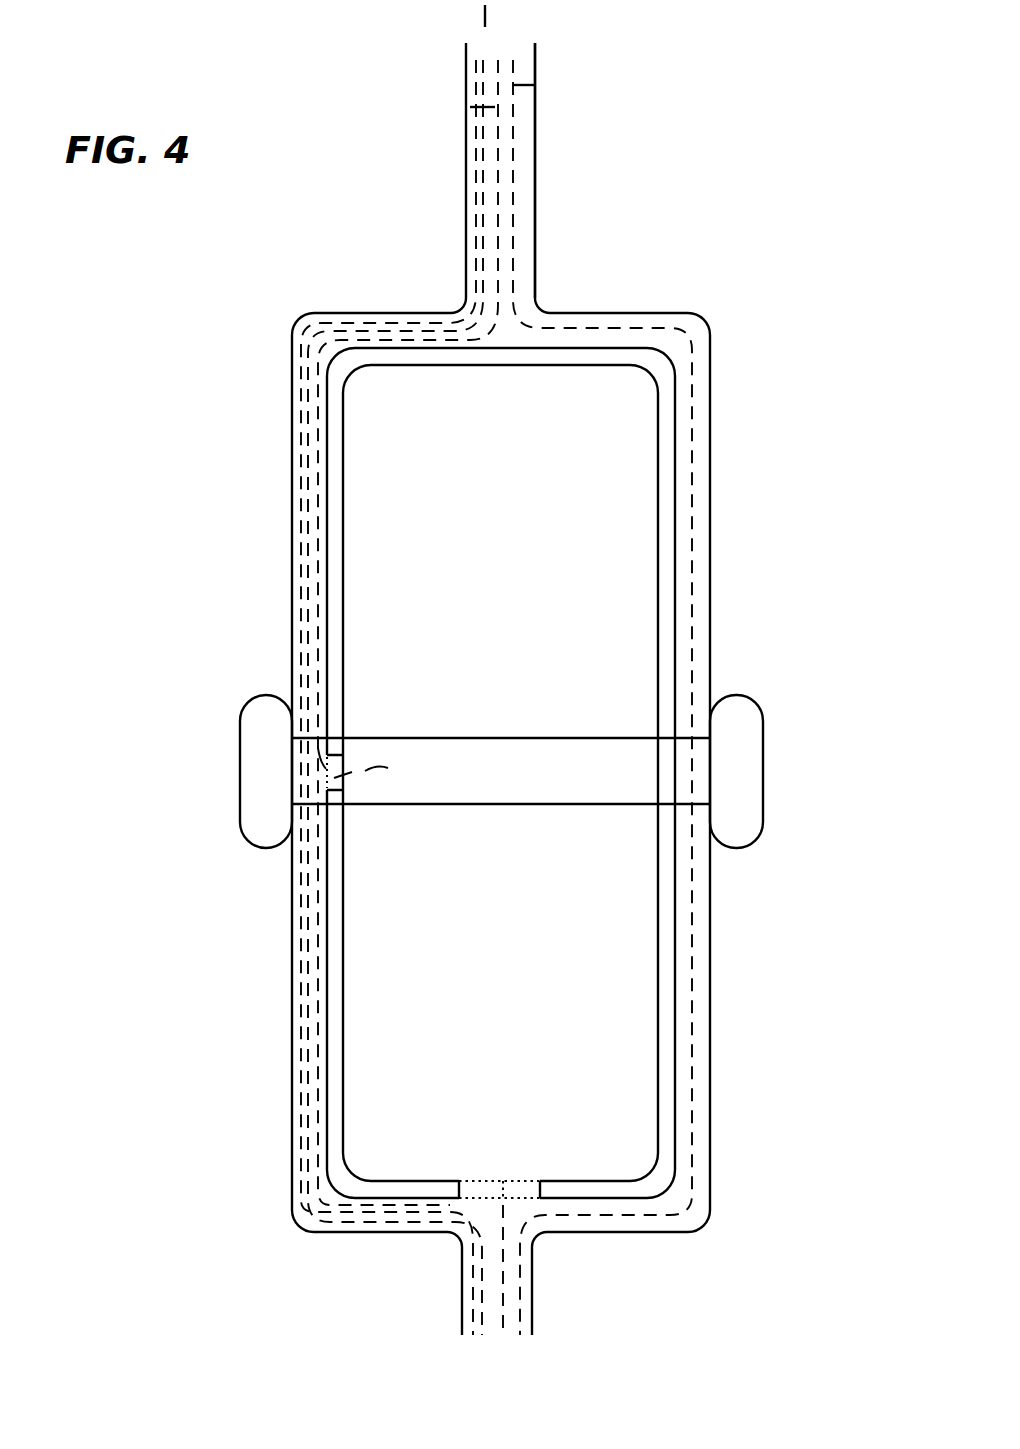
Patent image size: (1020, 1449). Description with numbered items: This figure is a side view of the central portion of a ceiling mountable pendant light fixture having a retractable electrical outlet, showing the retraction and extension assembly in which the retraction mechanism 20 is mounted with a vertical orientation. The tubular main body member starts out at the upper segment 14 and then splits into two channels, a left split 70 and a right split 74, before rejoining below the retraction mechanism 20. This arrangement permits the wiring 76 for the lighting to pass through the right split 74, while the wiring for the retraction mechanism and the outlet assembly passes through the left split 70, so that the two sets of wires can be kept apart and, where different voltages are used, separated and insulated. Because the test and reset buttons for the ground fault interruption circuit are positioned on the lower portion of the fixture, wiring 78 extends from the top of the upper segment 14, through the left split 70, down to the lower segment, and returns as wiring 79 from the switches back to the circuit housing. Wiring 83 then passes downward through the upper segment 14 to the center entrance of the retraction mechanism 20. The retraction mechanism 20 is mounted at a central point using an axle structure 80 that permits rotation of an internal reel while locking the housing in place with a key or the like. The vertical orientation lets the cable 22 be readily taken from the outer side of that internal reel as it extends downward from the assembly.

The upper segment 14 is at (535, 258).
The retraction mechanism 20 is at (603, 1029).
The cable 22 is at (505, 1325).
The left split 70 is at (292, 447).
The right split 74 is at (712, 477).
The wiring for the lighting 76 is at (535, 85).
The wiring 78 is at (470, 270).
The wiring 79 is at (485, 20).
The axle structure 80 is at (240, 780).
The wiring 83 is at (493, 107).